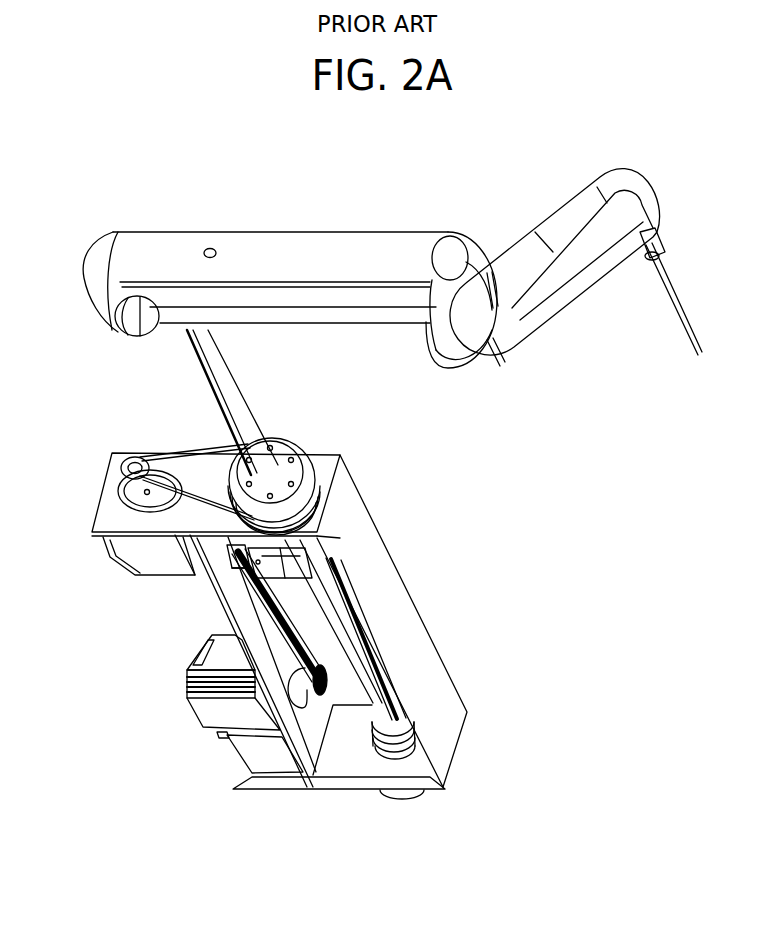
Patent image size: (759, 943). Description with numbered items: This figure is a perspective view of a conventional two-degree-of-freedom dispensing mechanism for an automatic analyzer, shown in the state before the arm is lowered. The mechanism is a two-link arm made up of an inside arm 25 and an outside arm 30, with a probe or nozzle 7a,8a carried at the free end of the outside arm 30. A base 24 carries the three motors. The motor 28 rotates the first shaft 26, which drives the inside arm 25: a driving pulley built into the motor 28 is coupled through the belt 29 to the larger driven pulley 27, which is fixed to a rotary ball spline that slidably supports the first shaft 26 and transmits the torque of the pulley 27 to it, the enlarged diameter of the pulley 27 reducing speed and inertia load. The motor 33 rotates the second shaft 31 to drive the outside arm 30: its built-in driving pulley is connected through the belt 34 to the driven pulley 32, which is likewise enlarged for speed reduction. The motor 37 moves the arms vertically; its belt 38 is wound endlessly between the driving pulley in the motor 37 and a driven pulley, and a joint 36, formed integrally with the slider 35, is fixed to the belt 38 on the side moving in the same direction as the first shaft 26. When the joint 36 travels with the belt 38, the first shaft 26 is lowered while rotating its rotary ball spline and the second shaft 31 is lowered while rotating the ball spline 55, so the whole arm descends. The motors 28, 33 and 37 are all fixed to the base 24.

The end effector / tool 7a,8a is at (690, 347).
The base 24 is at (365, 500).
The inside arm 25 is at (386, 340).
The first shaft 26 is at (240, 385).
The pulley 27 is at (300, 455).
The motor 28 is at (140, 578).
The belt 29 is at (197, 453).
The outside arm 30 is at (517, 352).
The second shaft 31 is at (367, 683).
The pulley 32 is at (410, 798).
The motor 33 is at (231, 753).
The belt 34 is at (372, 790).
The slider 35 is at (300, 575).
The joint 36 is at (230, 562).
The motor 37 is at (195, 717).
The belt 38 is at (277, 630).
The ball spline 55 is at (410, 730).